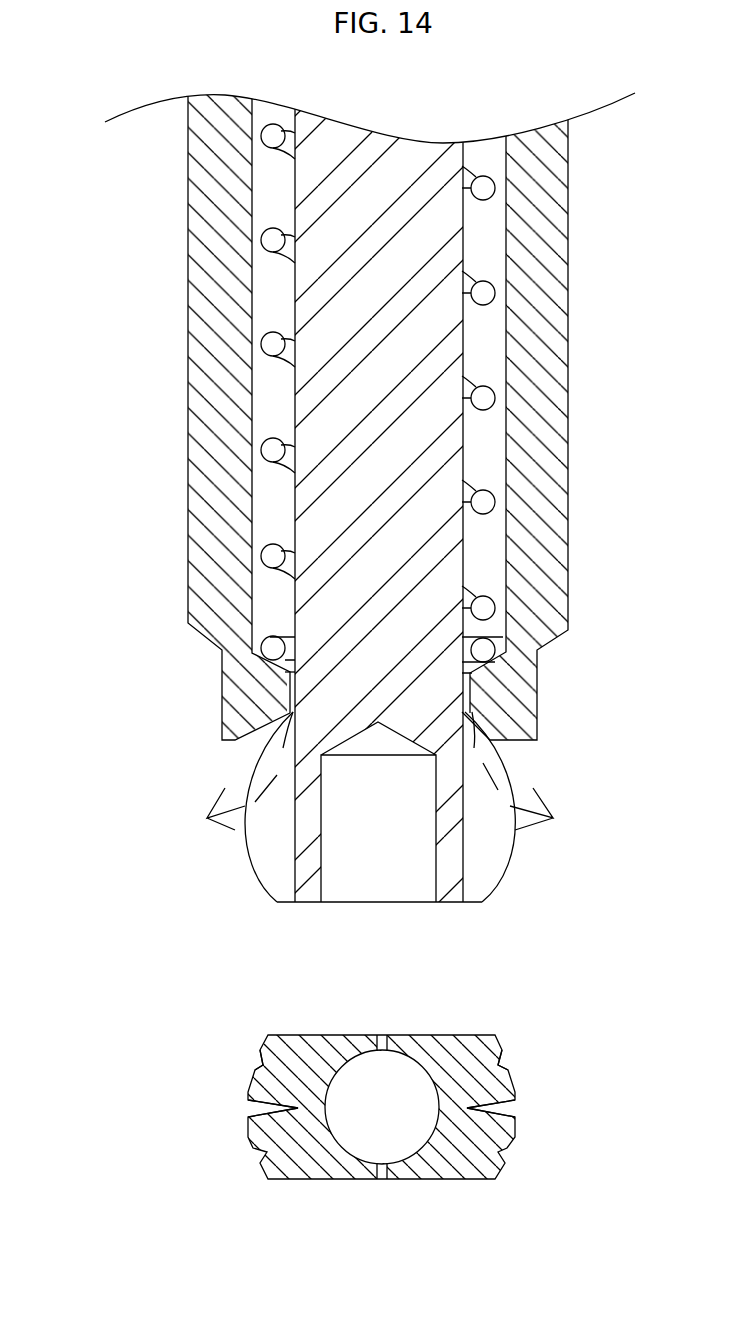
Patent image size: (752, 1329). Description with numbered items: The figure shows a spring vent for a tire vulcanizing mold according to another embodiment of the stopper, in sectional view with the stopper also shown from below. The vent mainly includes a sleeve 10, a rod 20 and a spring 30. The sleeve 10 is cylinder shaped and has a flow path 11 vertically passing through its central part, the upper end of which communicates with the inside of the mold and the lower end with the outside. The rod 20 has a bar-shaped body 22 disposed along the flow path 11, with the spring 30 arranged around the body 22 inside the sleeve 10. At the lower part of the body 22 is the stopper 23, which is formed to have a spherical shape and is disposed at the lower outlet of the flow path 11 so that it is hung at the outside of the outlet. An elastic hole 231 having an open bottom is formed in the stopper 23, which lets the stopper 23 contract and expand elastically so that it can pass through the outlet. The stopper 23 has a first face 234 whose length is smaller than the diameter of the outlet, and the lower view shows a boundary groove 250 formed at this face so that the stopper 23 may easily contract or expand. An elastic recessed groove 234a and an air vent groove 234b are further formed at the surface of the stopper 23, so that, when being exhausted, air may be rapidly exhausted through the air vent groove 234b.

The sleeve 10 is at (165, 246).
The flow path 11 is at (252, 215).
The rod 20 is at (291, 293).
The body 22 is at (433, 223).
The stopper 23 is at (258, 845).
The spring 30 is at (270, 456).
The elastic hole 231 is at (389, 872).
The first face 234 is at (632, 1035).
The elastic recessed groove 234a is at (263, 1065).
The air vent groove 234b is at (286, 850).
The boundary groove 250 is at (384, 1040).